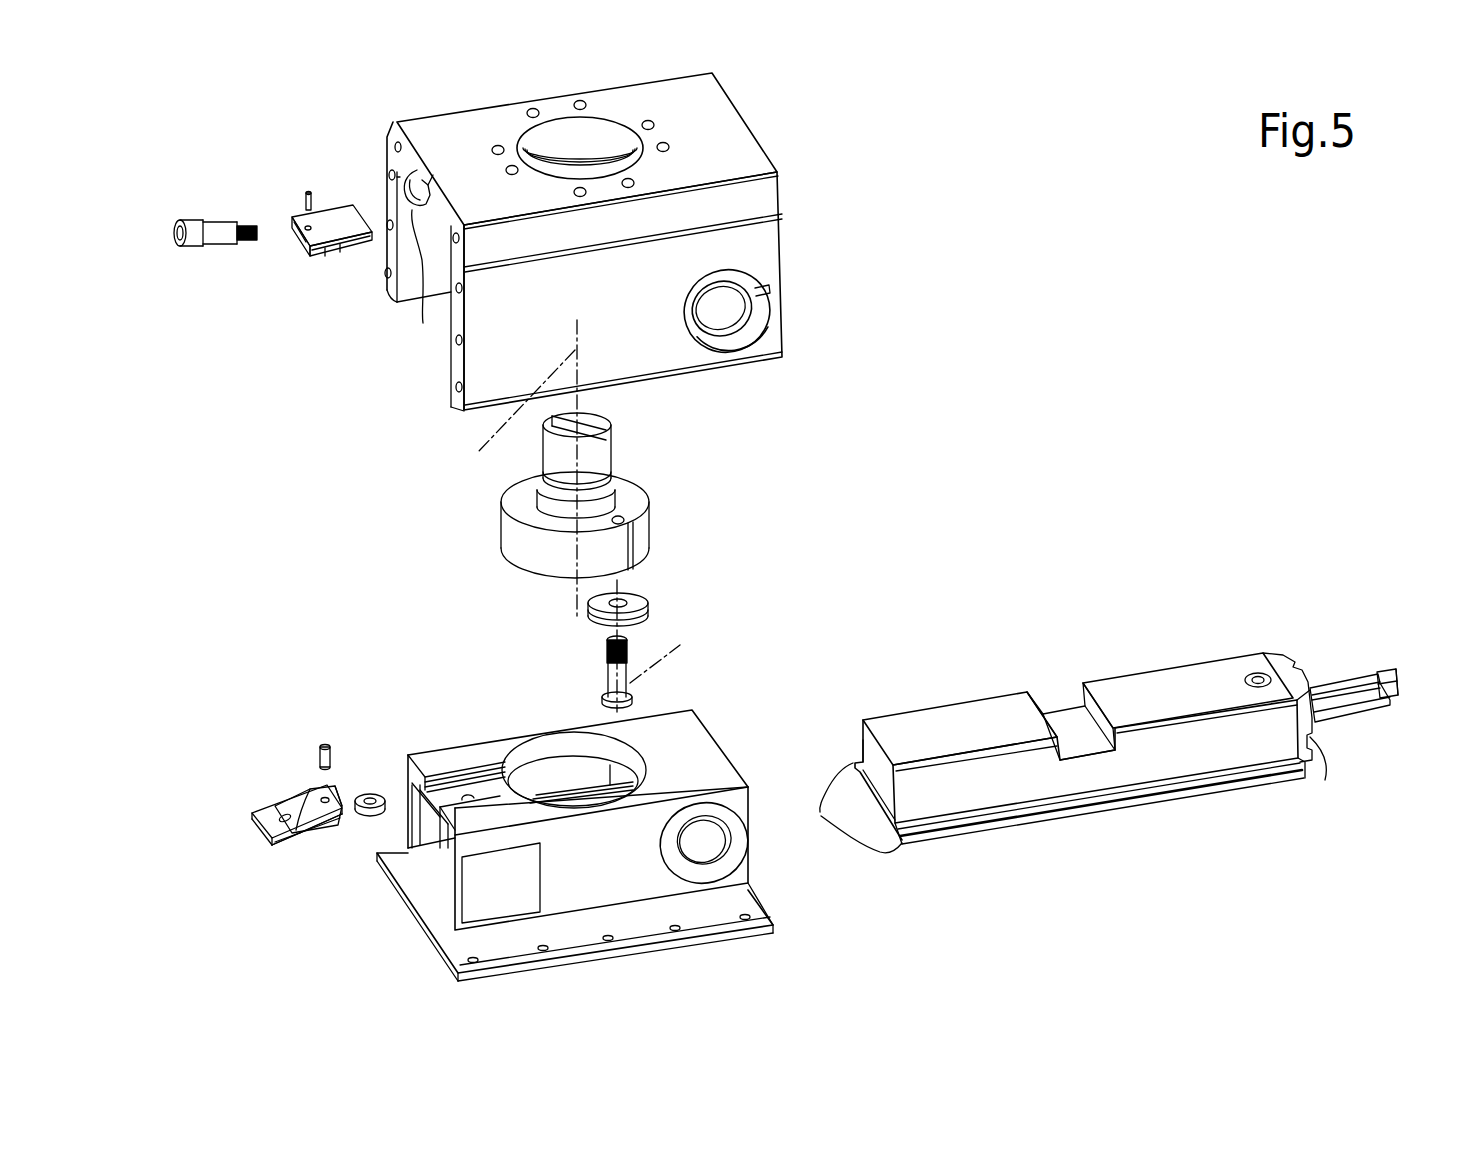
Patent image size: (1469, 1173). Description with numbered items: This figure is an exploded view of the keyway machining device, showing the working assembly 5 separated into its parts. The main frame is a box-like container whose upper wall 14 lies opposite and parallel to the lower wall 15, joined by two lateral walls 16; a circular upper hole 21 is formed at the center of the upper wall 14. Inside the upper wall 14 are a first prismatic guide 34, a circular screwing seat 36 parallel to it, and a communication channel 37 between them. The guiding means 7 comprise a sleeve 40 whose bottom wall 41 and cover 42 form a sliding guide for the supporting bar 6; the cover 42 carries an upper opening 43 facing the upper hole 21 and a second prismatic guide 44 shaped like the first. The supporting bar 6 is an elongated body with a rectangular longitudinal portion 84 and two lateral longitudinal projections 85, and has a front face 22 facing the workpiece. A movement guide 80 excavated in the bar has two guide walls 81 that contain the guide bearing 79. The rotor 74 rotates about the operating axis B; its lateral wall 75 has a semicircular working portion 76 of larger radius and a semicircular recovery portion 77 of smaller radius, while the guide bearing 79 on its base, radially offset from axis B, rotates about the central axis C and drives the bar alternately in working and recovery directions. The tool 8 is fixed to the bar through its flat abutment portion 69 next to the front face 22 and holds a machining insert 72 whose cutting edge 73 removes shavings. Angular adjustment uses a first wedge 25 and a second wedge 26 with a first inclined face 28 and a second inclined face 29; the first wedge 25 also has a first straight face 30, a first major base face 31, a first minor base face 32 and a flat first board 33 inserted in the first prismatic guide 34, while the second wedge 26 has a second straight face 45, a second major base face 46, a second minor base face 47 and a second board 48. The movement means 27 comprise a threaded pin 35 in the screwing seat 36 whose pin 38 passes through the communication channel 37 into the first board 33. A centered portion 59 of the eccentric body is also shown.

The working assembly 5 is at (862, 543).
The supporting bar 6 is at (980, 725).
The guiding means 7 is at (398, 651).
The tool 8 is at (1360, 680).
The upper wall 14 is at (700, 118).
The lower wall 15 is at (640, 955).
The lateral walls 16 is at (393, 292).
The upper hole 21 is at (528, 143).
The front face 22 is at (1283, 660).
The first wedge 25 is at (267, 192).
The second wedge 26 is at (262, 832).
The movement means 27 is at (176, 171).
The first inclined face 28 is at (340, 266).
The second inclined face 29 is at (290, 800).
The first straight face 30 is at (288, 228).
The first major base face 31 is at (340, 215).
The first minor base face 32 is at (315, 262).
The first board 33 is at (330, 262).
The first prismatic guide 34 is at (408, 185).
The threaded pin 35 is at (185, 225).
The screwing seat 36 is at (414, 168).
The communication channel 37 is at (421, 322).
The pin 38 is at (305, 200).
The sleeve 40 is at (718, 698).
The bottom wall 41 is at (755, 860).
The cover 42 is at (705, 760).
The upper opening 43 is at (545, 742).
The second prismatic guide 44 is at (440, 797).
The second straight face 45 is at (340, 815).
The second major base face 46 is at (305, 840).
The second minor base face 47 is at (318, 790).
The second board 48 is at (290, 850).
The centered portion 59 is at (1255, 677).
The flat abutment portion 69 is at (1322, 745).
The machining insert 72 is at (1390, 675).
The cutting edge 73 is at (1398, 684).
The rotor 74 is at (595, 448).
The lateral wall 75 is at (503, 522).
The working portion 76 is at (532, 545).
The recovery portion 77 is at (640, 537).
The guide bearing 79 is at (633, 600).
The movement guide 80 is at (1100, 750).
The guide walls 81 is at (1078, 700).
The longitudinal portion 84 is at (905, 737).
The longitudinal projections 85 is at (821, 808).
The operating axis B is at (516, 468).
The central axis C is at (651, 646).